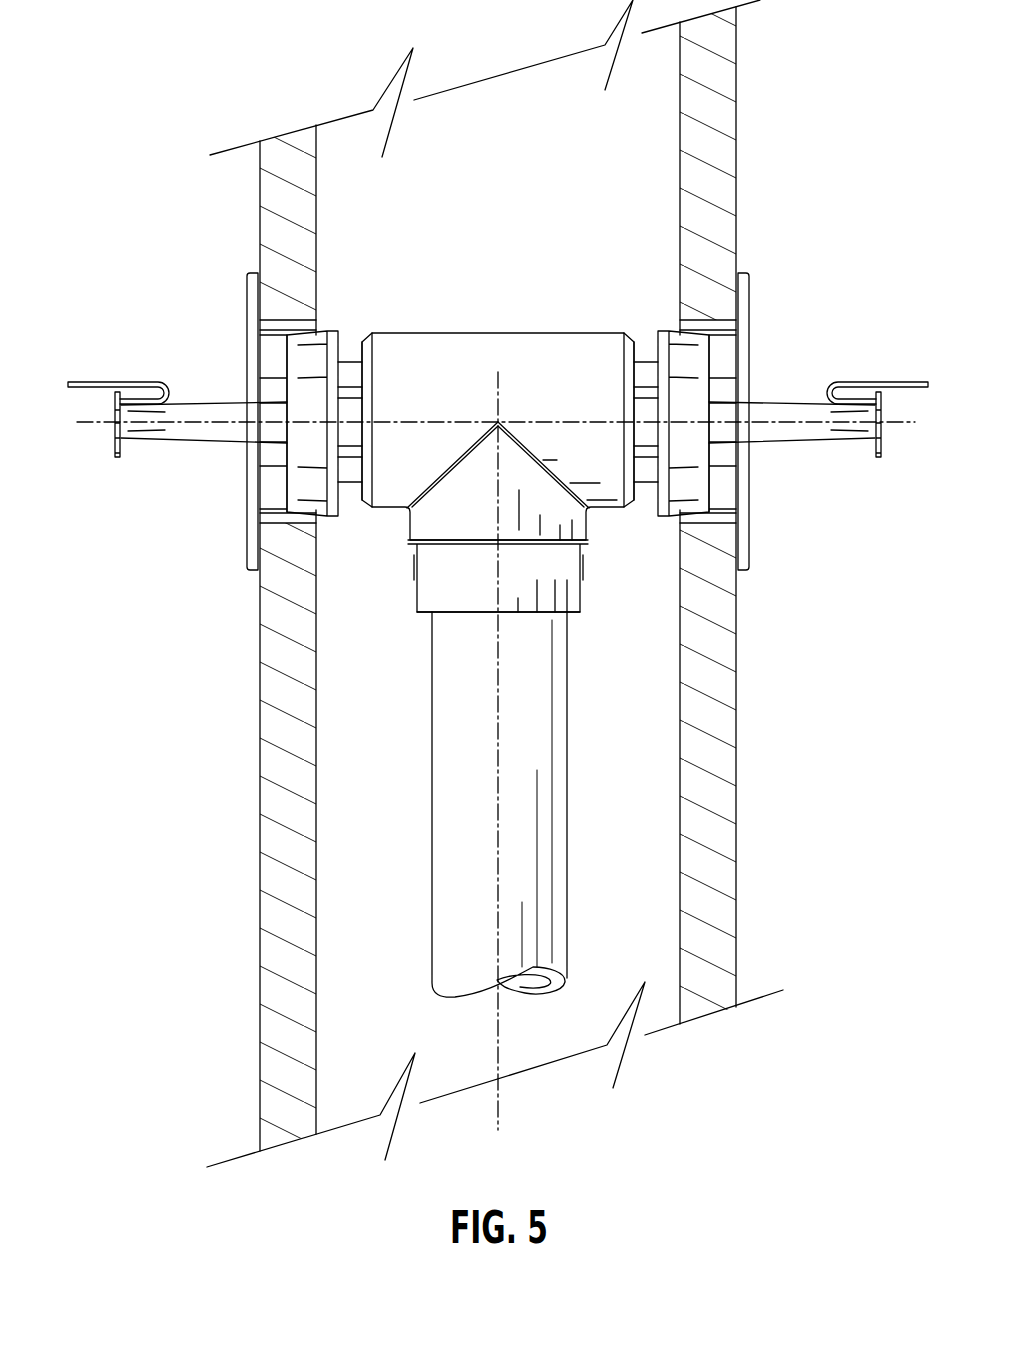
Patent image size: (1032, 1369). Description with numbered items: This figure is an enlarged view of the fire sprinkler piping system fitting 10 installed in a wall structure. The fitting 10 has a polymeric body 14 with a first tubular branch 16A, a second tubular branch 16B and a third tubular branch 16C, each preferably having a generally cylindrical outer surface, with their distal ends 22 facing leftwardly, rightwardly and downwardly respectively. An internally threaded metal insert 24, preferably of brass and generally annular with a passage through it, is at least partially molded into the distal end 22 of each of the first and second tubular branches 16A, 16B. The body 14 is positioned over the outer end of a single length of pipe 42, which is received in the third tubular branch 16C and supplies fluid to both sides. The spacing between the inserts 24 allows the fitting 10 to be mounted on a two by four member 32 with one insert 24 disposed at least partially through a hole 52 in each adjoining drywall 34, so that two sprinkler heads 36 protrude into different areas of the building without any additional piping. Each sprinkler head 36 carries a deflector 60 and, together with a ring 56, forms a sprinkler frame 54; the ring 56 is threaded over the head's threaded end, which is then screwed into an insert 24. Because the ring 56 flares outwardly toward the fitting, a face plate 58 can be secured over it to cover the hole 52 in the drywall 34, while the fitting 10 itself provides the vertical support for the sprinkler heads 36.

The fire sprinkler piping system fitting 10 is at (497, 625).
The polymeric body 14 is at (523, 333).
The first tubular branch 16A is at (392, 333).
The second tubular branch 16B is at (600, 333).
The third tubular branch 16C is at (563, 588).
The distal end 22 is at (348, 507).
The internally threaded metal insert 24 is at (349, 372).
The two by four member 32 is at (617, 160).
The drywall 34 is at (262, 190).
The sprinkler head 36 is at (178, 449).
The length of pipe 42 is at (483, 816).
The hole 52 is at (283, 527).
The sprinkler frame 54 is at (282, 350).
The ring 56 is at (298, 447).
The face plate 58 is at (247, 367).
The deflector 60 is at (111, 458).